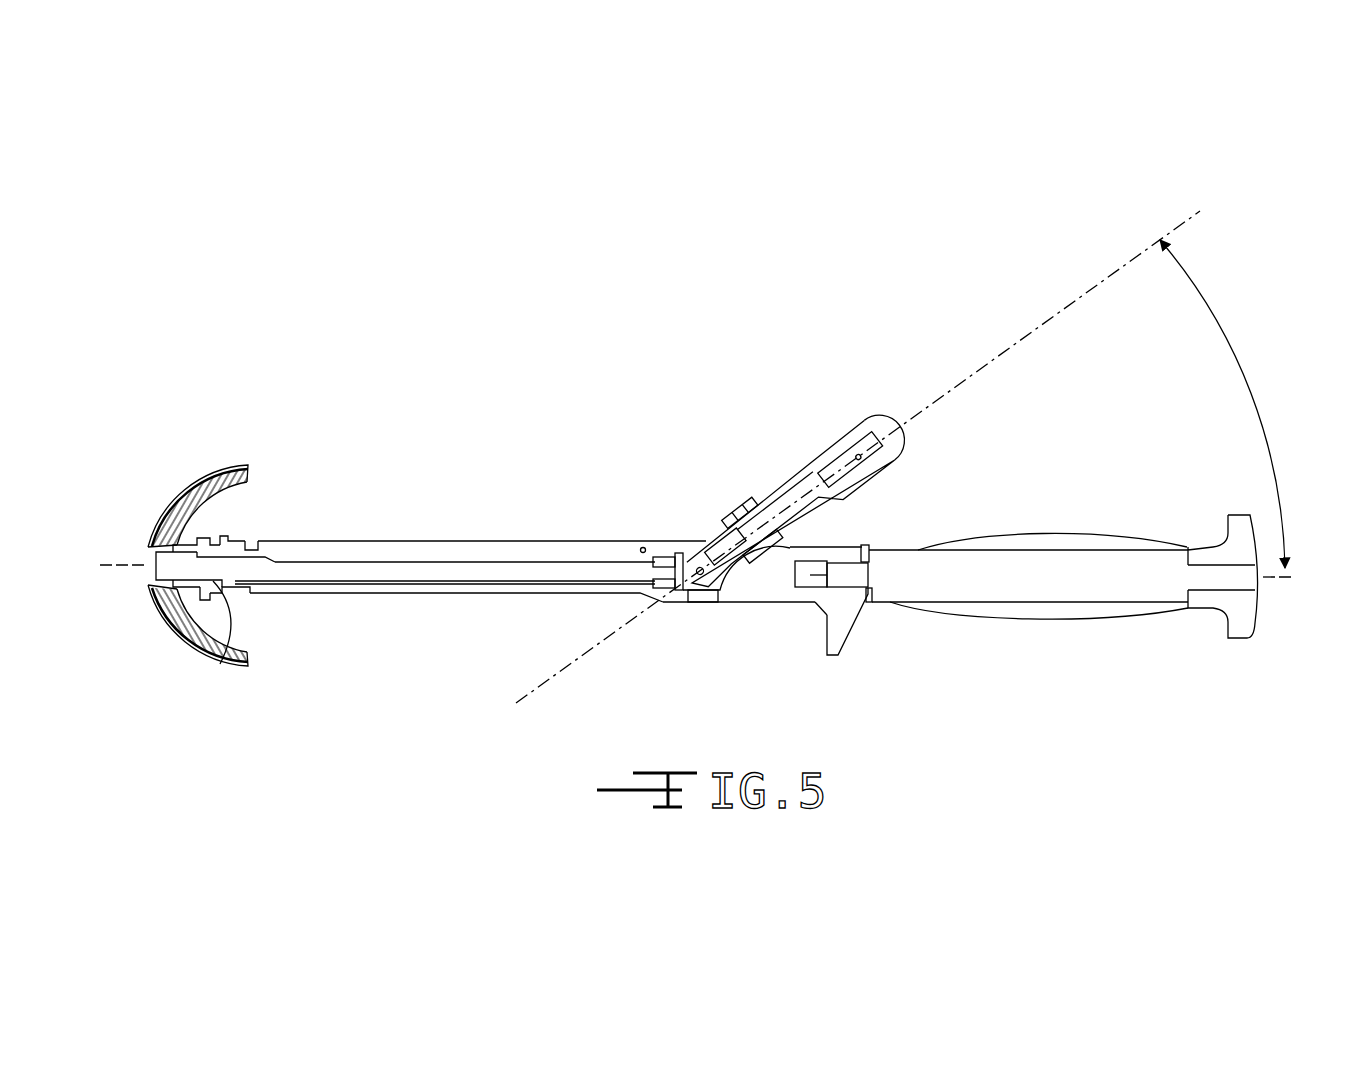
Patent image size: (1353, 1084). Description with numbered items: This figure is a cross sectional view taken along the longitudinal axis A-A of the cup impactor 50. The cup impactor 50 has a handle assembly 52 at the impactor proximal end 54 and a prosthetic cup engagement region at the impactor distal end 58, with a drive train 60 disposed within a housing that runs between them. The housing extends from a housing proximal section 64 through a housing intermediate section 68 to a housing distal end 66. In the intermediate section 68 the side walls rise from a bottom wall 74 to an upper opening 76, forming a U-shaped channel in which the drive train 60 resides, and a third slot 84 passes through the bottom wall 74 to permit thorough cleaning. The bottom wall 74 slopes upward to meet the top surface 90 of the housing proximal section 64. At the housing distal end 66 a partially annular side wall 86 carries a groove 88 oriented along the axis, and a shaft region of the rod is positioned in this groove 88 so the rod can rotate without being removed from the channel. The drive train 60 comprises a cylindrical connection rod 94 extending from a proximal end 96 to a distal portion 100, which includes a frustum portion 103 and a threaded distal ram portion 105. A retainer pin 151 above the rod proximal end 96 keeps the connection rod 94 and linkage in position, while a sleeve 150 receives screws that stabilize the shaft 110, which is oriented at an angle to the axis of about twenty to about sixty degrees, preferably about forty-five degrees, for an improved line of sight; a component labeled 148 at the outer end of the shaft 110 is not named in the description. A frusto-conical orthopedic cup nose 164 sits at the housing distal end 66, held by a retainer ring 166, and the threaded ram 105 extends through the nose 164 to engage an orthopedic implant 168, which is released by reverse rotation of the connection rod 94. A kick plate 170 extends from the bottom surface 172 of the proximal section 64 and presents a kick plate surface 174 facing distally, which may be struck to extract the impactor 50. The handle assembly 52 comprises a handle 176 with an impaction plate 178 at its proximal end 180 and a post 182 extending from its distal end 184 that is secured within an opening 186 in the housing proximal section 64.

The cup impactor 50 is at (608, 385).
The handle assembly 52 is at (1058, 528).
The impactor proximal end 54 is at (1250, 640).
The impactor distal end 58 is at (193, 650).
The drive train 60 is at (720, 530).
The housing proximal section 64 is at (763, 593).
The housing distal end 66 is at (247, 535).
The housing intermediate section 68 is at (498, 540).
The bottom wall 74 is at (463, 594).
The upper opening 76 is at (417, 550).
The third slot 84 is at (702, 603).
The annular side wall 86 is at (221, 664).
The groove 88 is at (217, 540).
The top surface 90 is at (810, 543).
The connection rod 94 is at (563, 577).
The connection rod proximal end 96 is at (677, 587).
The distal rod portion 100 is at (222, 585).
The frustum portion 103 is at (257, 547).
The distal ram portion 105 is at (157, 567).
The shaft 110 is at (790, 480).
The handle end cap 148 is at (900, 450).
The sleeve 150 is at (737, 510).
The retainer pin 151 is at (643, 546).
The orthopedic cup nose 164 is at (170, 537).
The retainer ring 166 is at (204, 600).
The orthopedic implant 168 is at (197, 507).
The kick plate 170 is at (843, 628).
The bottom surface 172 is at (798, 606).
The kick plate surface 174 is at (824, 627).
The handle 176 is at (1073, 588).
The impaction plate 178 is at (1233, 533).
The handle proximal end 180 is at (1248, 580).
The post 182 is at (842, 567).
The handle distal end 184 is at (866, 545).
The opening 186 is at (838, 575).